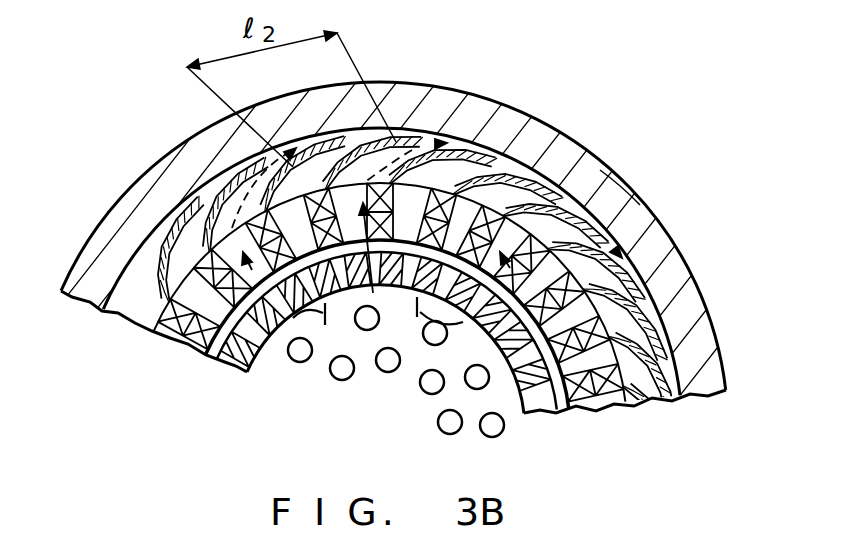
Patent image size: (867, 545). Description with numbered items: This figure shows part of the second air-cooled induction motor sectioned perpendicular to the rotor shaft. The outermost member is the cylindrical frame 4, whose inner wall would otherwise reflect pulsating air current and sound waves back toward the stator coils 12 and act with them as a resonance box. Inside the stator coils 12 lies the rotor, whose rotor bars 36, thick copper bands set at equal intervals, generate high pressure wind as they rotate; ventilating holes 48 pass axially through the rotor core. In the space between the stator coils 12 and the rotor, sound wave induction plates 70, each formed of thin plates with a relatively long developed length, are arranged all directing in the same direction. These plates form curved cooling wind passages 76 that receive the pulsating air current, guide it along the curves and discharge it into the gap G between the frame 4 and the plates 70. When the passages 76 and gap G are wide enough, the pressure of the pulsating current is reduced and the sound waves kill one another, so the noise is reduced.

The frame 4 is at (447, 84).
The stator coils 12 is at (595, 247).
The rotor bars 36 is at (543, 327).
The ventilating holes 48 is at (356, 330).
The sound wave induction plates 70 is at (530, 190).
The cooling wind passages 76 is at (207, 195).
The gap G is at (617, 185).